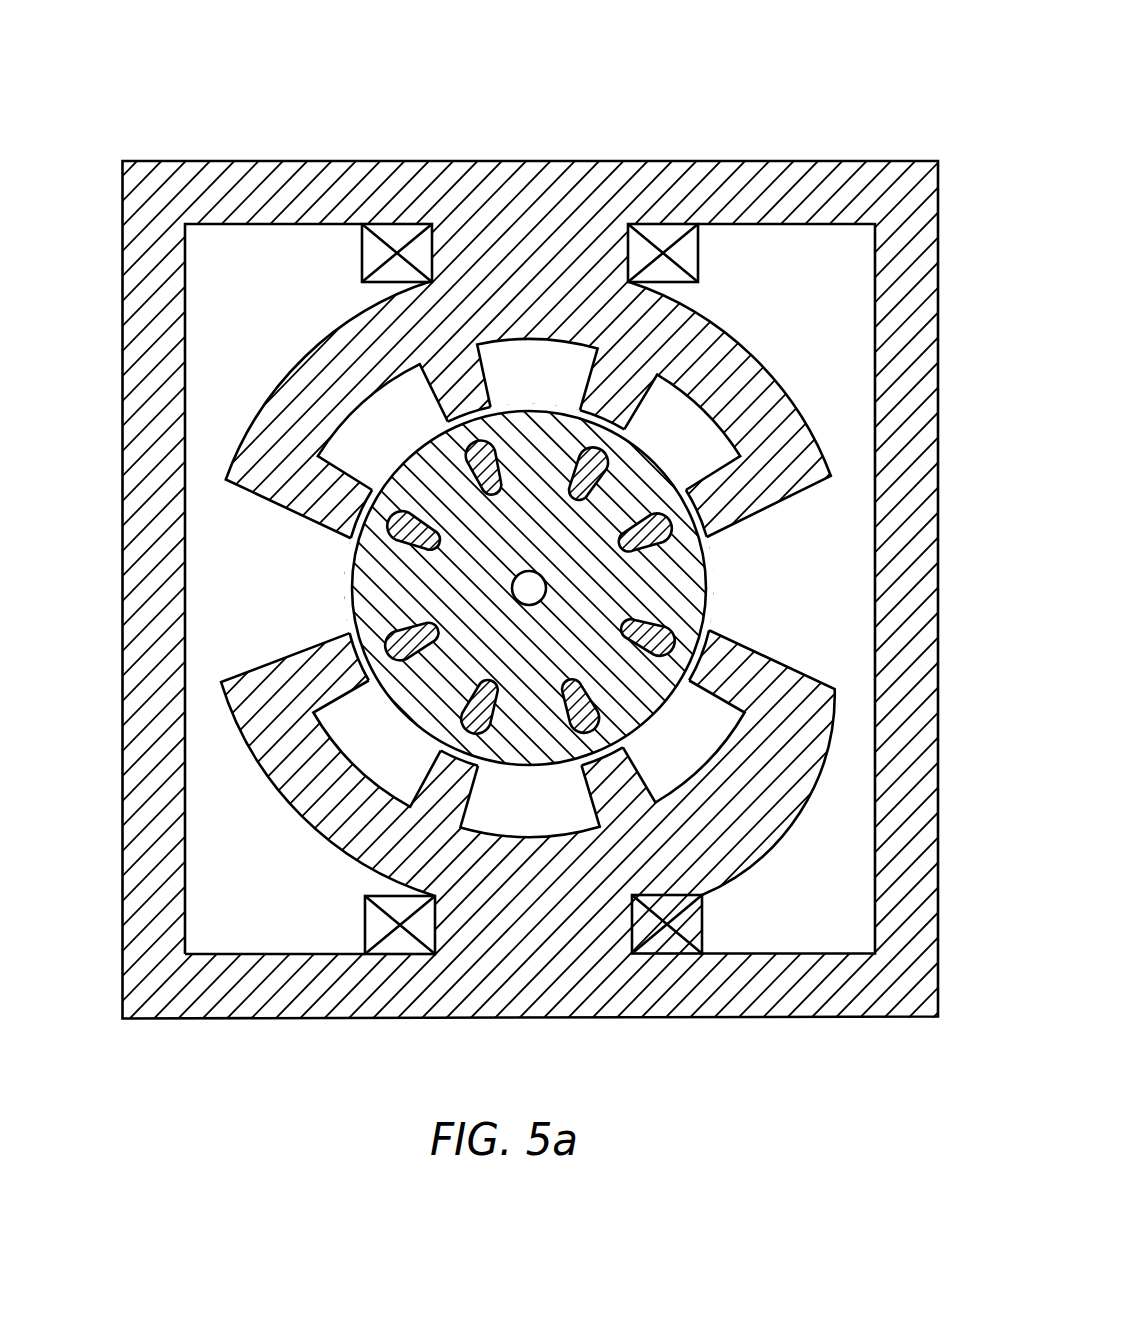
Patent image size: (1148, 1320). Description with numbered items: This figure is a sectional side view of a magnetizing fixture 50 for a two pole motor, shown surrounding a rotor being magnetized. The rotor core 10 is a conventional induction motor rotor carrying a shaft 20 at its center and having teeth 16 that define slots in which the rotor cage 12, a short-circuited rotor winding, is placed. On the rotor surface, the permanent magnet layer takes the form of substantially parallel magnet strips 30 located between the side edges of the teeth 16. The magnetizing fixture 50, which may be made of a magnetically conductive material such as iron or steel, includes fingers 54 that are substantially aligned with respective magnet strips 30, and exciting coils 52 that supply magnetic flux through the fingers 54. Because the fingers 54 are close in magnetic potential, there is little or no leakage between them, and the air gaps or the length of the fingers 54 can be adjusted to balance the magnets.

The rotor core 10 is at (466, 594).
The rotor cage 12 is at (478, 485).
The teeth 16 is at (534, 833).
The shaft 20 is at (546, 589).
The magnet strips 30 is at (575, 423).
The magnetizing fixture 50 is at (760, 141).
The exciting coils 52 is at (628, 249).
The fingers 54 is at (352, 466).